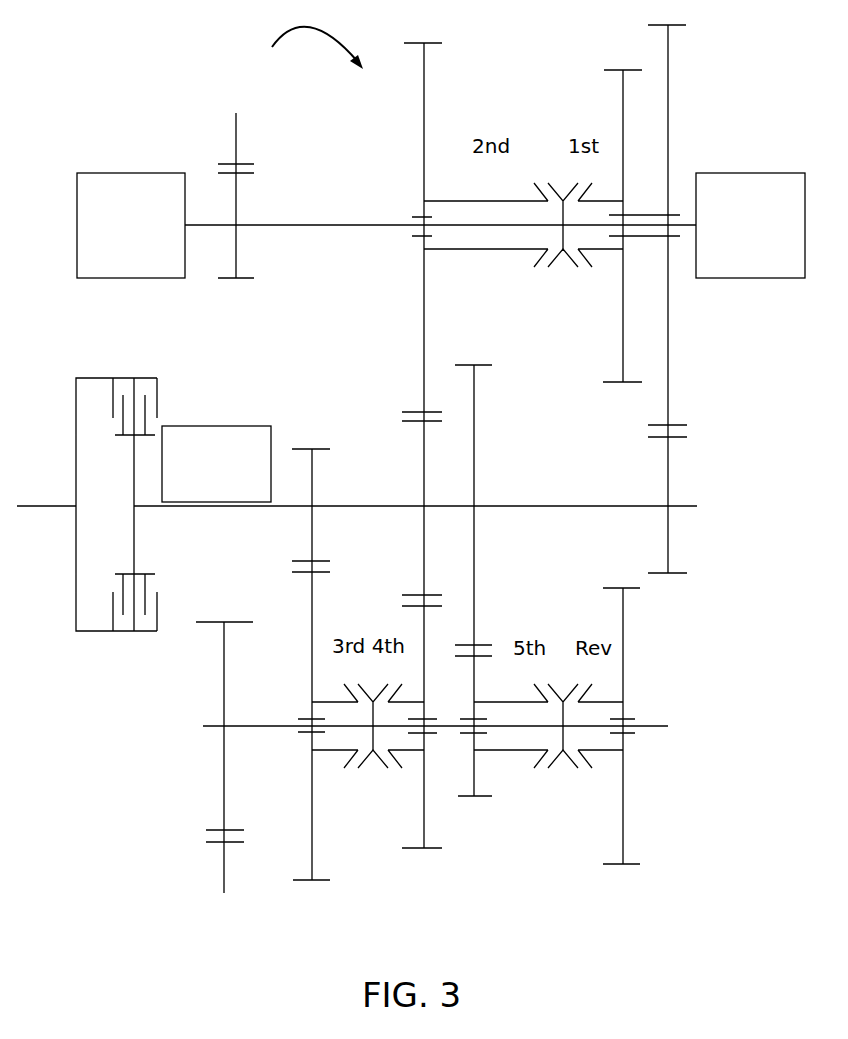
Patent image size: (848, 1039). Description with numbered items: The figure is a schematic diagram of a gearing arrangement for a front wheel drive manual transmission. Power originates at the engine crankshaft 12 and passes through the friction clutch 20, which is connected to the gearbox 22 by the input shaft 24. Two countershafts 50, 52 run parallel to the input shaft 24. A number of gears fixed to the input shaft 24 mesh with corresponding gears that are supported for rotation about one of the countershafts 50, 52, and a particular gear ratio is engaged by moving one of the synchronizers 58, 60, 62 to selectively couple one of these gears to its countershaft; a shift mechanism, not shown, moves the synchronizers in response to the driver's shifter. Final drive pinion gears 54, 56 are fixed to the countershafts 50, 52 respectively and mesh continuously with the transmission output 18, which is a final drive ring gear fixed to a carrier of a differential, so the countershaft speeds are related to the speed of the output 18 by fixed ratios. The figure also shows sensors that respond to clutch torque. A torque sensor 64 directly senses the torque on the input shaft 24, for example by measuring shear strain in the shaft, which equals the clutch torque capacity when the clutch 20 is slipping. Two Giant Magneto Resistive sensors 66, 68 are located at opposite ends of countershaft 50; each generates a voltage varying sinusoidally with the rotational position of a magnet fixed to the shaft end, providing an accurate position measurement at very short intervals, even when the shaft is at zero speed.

The crankshaft 12 is at (60, 506).
The transmission output 18 is at (237, 130).
The friction clutch 20 is at (147, 378).
The gearbox 22 is at (308, 52).
The input shaft 24 is at (392, 506).
The countershaft 50 is at (302, 226).
The countershaft 52 is at (448, 728).
The final drive pinion gear 54 is at (232, 200).
The final drive pinion gear 56 is at (224, 787).
The synchronizer 58 is at (563, 290).
The synchronizer 60 is at (373, 780).
The synchronizer 62 is at (563, 789).
The torque sensor 64 is at (223, 425).
The GMR sensor 66 is at (773, 278).
The GMR sensor 68 is at (152, 279).